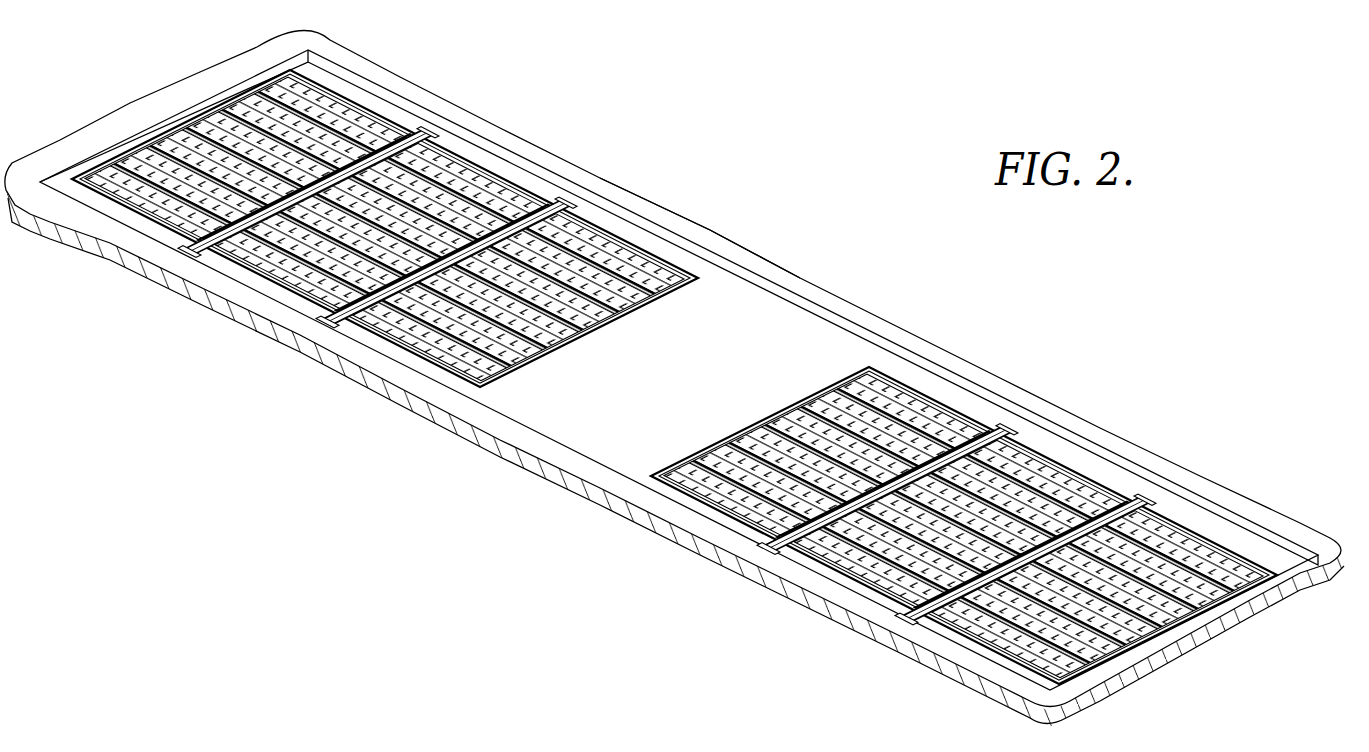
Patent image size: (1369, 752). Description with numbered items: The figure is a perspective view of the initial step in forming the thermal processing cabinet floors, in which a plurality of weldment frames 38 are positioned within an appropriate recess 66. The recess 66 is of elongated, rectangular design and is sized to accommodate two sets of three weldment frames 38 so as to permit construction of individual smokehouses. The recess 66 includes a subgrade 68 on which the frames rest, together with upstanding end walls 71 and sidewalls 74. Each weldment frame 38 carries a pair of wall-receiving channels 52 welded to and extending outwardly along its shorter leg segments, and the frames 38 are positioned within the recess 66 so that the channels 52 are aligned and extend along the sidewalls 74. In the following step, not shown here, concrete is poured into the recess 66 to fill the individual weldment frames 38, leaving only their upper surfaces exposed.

The weldment frame 38 is at (347, 86).
The wall-receiving channel 52 is at (457, 143).
The recess 66 is at (676, 380).
The subgrade 68 is at (848, 278).
The end wall 71 is at (200, 108).
The sidewall 74 is at (748, 273).